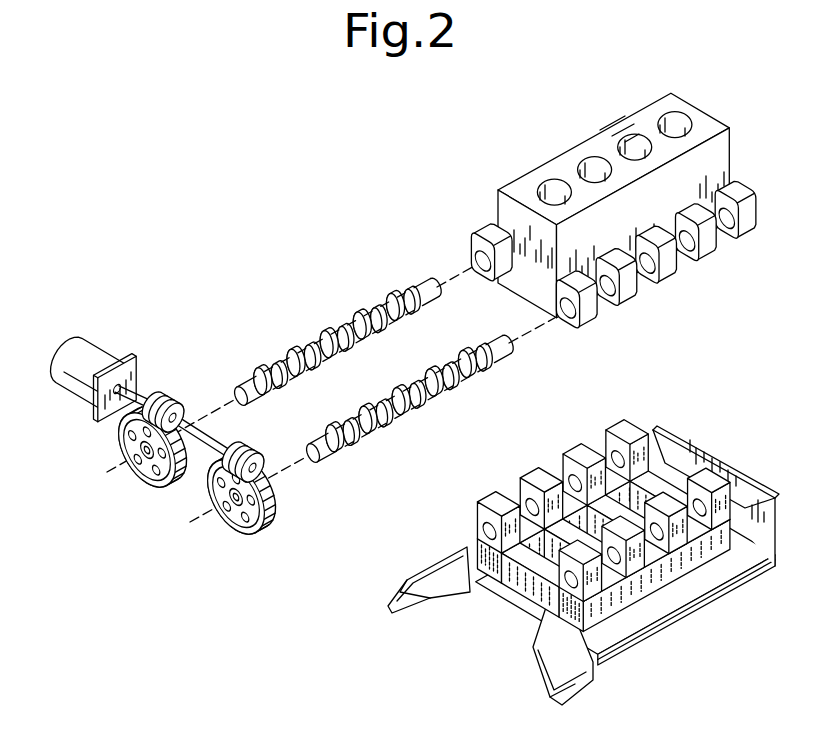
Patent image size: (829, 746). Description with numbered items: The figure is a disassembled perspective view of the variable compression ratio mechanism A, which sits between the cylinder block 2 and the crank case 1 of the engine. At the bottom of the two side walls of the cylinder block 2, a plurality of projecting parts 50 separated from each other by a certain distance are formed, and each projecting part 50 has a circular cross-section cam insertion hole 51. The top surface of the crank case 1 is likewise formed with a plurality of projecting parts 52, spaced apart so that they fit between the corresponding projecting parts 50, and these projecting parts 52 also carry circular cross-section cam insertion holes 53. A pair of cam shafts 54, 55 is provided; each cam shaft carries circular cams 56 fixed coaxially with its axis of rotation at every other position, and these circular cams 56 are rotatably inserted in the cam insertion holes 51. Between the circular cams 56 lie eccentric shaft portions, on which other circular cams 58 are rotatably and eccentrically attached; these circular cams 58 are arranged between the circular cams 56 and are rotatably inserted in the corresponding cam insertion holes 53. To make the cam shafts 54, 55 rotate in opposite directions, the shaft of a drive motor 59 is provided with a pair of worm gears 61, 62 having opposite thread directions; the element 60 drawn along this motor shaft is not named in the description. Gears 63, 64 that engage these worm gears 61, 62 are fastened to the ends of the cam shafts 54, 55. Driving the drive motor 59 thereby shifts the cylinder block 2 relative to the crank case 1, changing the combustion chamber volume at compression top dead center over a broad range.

The crank case 1 is at (622, 622).
The cylinder block 2 is at (712, 167).
The variable compression ratio mechanism A is at (485, 164).
The projecting part 50 is at (492, 242).
The cam insertion hole 51 is at (474, 252).
The projecting part 52 is at (625, 438).
The cam insertion hole 53 is at (532, 497).
The cam shaft 54 is at (452, 356).
The cam shaft 55 is at (336, 367).
The circular cam 56 is at (412, 292).
The circular cam 58 is at (390, 300).
The drive motor 59 is at (75, 360).
The drive shaft 60 is at (203, 440).
The worm gear 61 is at (252, 447).
The worm gear 62 is at (164, 400).
The gear 63 is at (248, 528).
The gear 64 is at (133, 465).